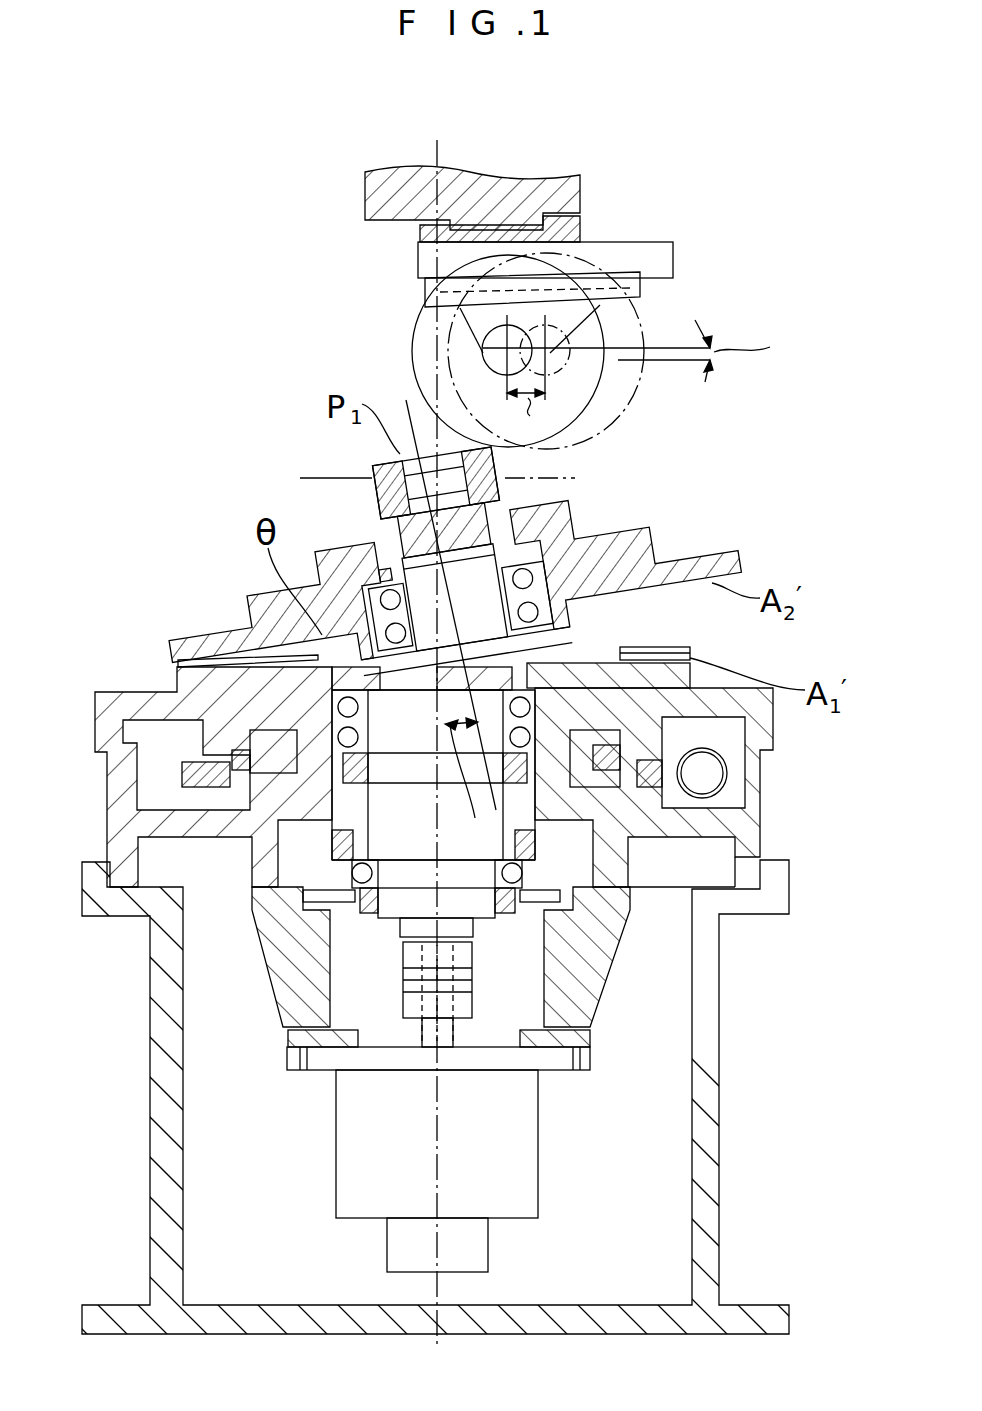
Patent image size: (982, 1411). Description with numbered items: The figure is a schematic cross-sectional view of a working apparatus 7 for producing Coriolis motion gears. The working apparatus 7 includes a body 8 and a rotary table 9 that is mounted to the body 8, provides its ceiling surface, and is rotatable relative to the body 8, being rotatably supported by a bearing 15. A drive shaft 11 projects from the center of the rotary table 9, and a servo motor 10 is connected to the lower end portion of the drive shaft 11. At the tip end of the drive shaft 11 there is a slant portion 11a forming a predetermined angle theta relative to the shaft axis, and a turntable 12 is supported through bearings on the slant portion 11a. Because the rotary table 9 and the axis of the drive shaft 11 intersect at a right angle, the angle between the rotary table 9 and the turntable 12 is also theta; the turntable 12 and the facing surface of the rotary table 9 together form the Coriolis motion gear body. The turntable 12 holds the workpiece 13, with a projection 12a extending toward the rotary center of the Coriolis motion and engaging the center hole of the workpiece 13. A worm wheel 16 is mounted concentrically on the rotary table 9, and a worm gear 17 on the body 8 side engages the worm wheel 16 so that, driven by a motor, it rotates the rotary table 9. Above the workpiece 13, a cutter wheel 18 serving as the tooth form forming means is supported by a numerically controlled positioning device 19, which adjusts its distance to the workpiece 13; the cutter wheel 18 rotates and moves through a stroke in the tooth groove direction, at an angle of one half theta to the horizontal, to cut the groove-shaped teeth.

The working apparatus 7 is at (238, 332).
The body 8 is at (165, 1040).
The rotary table 9 is at (120, 700).
The servo motor 10 is at (360, 1183).
The drive shaft 11 is at (422, 837).
The slant portion 11a is at (600, 655).
The turntable 12 is at (645, 540).
The projection 12a is at (500, 490).
The workpiece 13 is at (373, 470).
The bearing 15 is at (623, 763).
The worm wheel 16 is at (680, 810).
The worm gear 17 is at (705, 772).
The cutter wheel 18 is at (415, 335).
The positioning device 19 is at (582, 196).